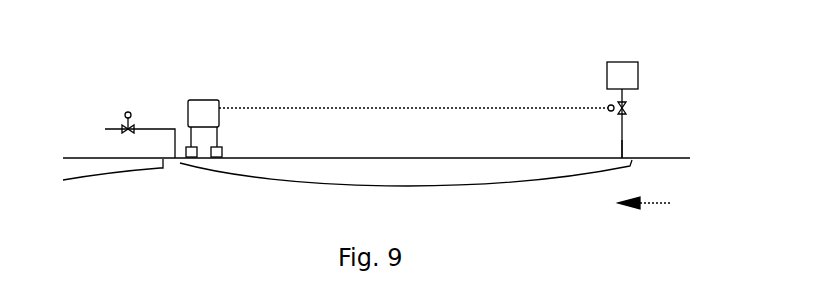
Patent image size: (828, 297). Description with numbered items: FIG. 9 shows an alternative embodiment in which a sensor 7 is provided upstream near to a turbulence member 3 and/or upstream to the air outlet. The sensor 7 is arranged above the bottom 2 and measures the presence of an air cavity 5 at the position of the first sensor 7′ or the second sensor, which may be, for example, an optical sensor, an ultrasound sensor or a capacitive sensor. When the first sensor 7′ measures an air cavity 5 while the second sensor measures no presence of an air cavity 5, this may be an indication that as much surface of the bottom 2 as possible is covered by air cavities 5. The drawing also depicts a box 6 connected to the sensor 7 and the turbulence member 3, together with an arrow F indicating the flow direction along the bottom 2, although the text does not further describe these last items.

The bottom 2 is at (676, 158).
The turbulence member 3 is at (633, 158).
The air cavity 5 is at (64, 172).
The valve control unit 6 is at (622, 64).
The sensor 7 is at (195, 100).
The first sensor 7′ is at (216, 162).
The flow direction F is at (652, 204).